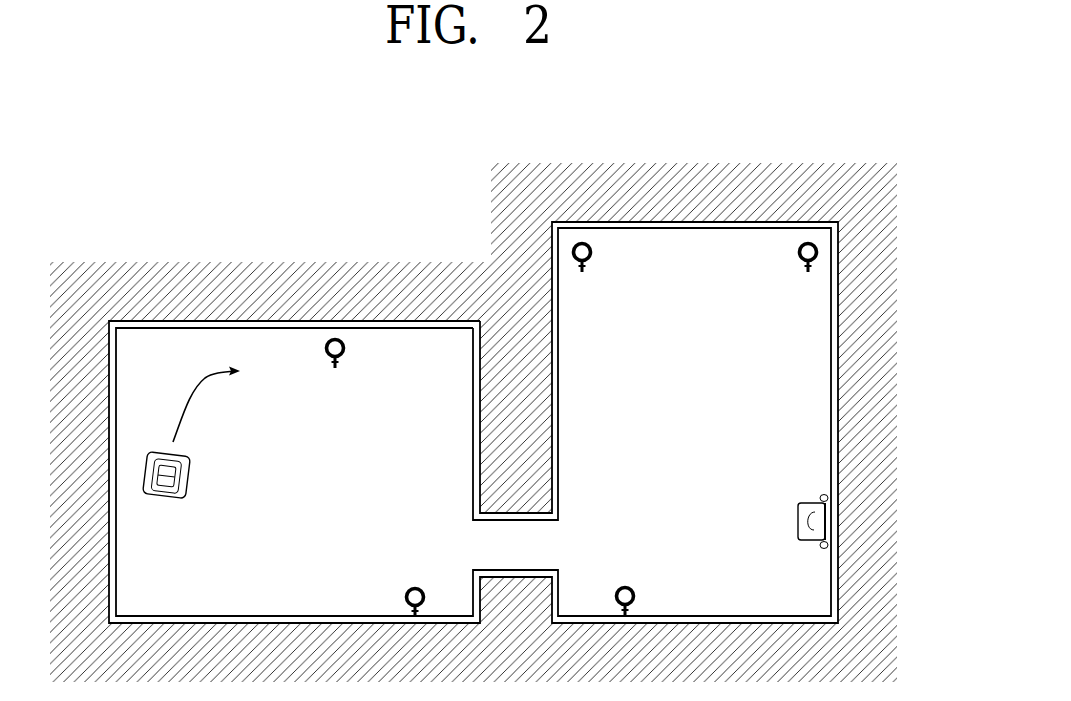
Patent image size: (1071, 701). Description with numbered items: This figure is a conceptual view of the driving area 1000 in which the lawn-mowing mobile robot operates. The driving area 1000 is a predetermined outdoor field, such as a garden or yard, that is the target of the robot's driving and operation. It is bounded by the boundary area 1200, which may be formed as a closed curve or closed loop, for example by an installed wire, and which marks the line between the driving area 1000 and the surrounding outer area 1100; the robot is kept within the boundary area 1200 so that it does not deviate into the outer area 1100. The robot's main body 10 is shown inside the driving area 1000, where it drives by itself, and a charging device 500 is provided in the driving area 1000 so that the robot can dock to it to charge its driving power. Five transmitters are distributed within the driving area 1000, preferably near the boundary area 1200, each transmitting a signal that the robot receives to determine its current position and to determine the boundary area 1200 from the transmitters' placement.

The driving area 1000 is at (284, 542).
The outer area 1100 is at (333, 204).
The boundary area 1200 is at (695, 229).
The main body 10 is at (163, 499).
The charging device 500 is at (798, 519).